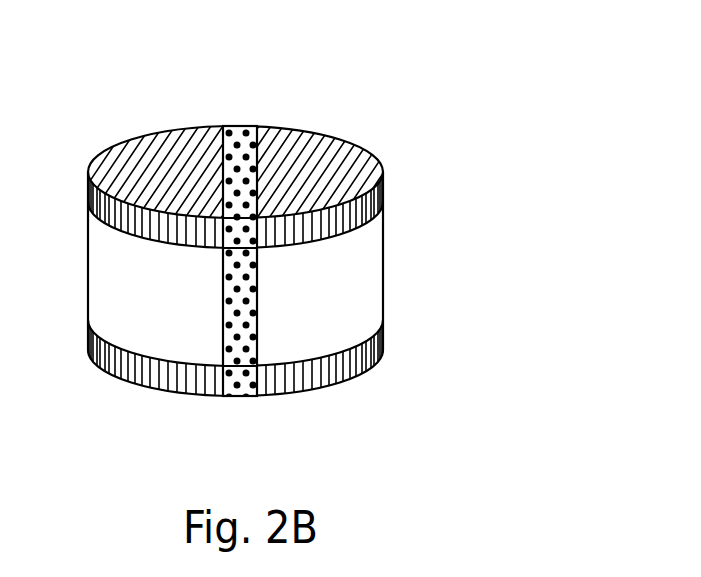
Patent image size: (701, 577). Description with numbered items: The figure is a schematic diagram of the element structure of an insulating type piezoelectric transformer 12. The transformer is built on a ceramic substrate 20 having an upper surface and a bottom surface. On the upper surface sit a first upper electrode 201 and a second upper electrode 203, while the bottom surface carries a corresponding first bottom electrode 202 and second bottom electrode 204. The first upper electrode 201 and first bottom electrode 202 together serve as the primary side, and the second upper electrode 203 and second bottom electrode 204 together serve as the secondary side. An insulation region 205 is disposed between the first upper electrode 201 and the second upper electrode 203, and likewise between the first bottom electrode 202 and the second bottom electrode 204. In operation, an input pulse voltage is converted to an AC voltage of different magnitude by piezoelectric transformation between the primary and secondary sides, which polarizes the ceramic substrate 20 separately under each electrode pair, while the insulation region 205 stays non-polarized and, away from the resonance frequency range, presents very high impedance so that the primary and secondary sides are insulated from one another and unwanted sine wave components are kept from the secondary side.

The insulating type piezoelectric transformer 12 is at (476, 114).
The ceramic substrate 20 is at (385, 275).
The first upper electrode 201 is at (152, 162).
The first bottom electrode 202 is at (152, 385).
The second upper electrode 203 is at (335, 150).
The second bottom electrode 204 is at (352, 380).
The insulation region 205 is at (238, 148).